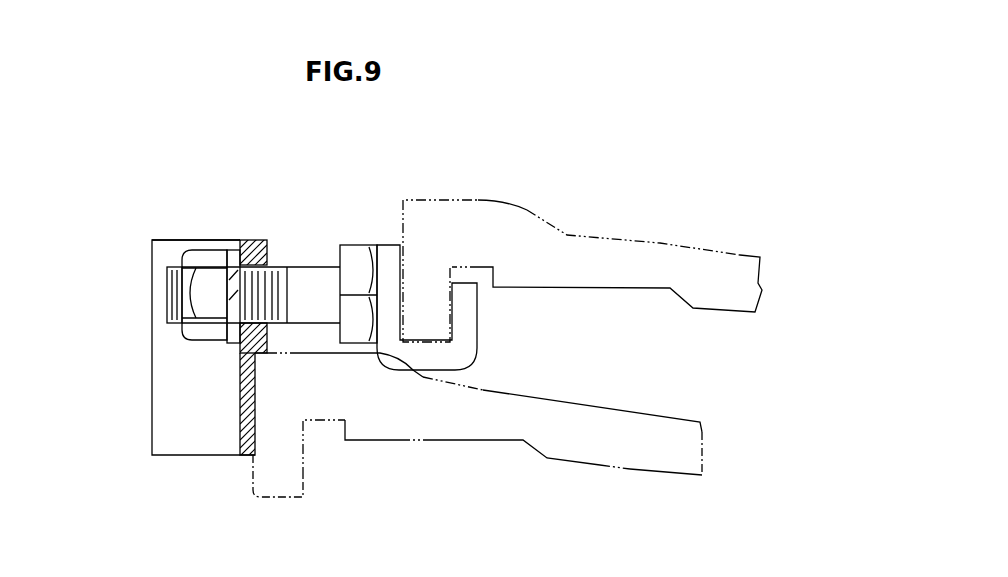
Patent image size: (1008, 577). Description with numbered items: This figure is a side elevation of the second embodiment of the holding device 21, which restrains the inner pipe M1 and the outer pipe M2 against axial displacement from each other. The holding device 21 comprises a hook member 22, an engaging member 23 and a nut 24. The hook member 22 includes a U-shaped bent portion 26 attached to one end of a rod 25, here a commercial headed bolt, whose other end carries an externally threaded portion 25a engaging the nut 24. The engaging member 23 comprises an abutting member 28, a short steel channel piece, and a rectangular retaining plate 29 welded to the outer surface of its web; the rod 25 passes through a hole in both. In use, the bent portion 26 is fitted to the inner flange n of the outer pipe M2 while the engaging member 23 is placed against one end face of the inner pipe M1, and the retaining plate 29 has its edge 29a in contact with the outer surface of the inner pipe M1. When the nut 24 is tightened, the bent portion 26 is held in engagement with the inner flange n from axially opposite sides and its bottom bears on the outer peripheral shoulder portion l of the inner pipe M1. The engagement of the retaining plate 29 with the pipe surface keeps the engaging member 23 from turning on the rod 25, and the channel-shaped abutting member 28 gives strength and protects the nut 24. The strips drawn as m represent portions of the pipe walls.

The holding device 21 is at (177, 232).
The hook member 22 is at (388, 266).
The engaging member 23 is at (177, 363).
The nut 24 is at (202, 290).
The rod 25 is at (308, 290).
The externally threaded portion 25a is at (163, 287).
The bent portion 26 is at (467, 305).
The abutting member 28 is at (243, 428).
The retaining plate 29 is at (263, 243).
The edge 29a is at (257, 353).
The inner pipe M1 is at (680, 457).
The outer pipe M2 is at (737, 263).
The strip portion m is at (690, 263).
The inner flange n is at (437, 322).
The outer peripheral shoulder portion l is at (527, 212).